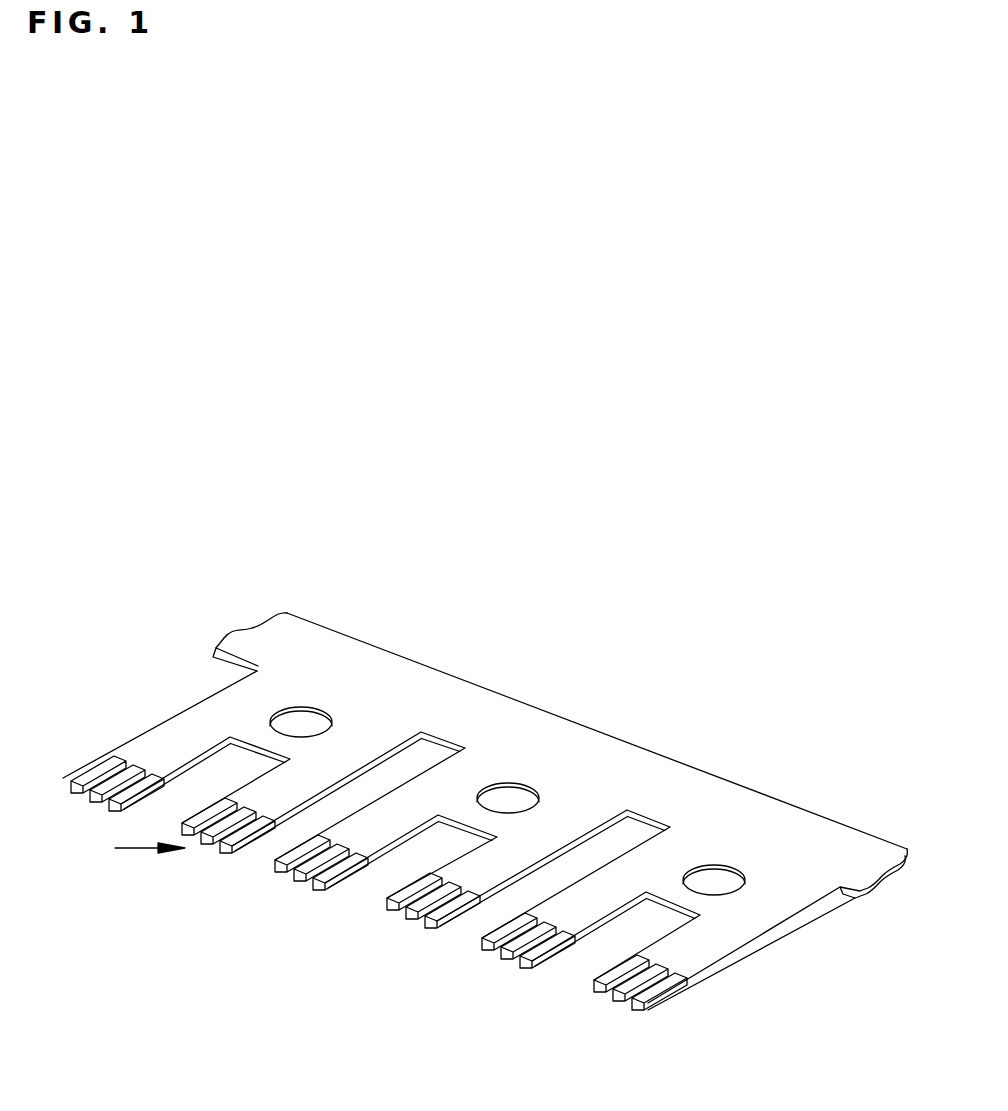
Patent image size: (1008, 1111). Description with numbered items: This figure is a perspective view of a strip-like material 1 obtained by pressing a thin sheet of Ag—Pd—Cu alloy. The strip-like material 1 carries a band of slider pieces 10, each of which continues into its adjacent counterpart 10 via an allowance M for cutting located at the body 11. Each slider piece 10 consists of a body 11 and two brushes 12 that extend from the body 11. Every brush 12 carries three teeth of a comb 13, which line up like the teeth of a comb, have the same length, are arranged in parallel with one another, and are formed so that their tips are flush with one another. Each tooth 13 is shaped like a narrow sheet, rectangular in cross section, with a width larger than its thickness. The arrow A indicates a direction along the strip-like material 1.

The strip-like material 1 is at (460, 577).
The slider piece 10 is at (102, 565).
The body 11 is at (284, 690).
The brush 12 is at (266, 800).
The tooth of a comb 13 is at (111, 802).
The allowance for cutting M is at (485, 792).
The feeding direction A is at (150, 862).